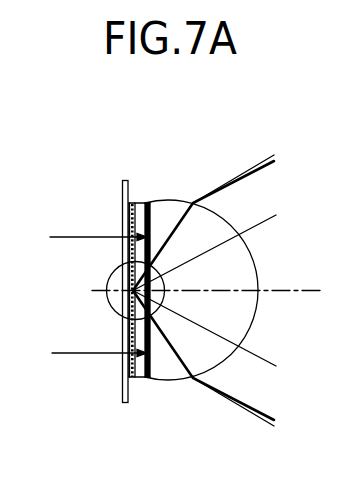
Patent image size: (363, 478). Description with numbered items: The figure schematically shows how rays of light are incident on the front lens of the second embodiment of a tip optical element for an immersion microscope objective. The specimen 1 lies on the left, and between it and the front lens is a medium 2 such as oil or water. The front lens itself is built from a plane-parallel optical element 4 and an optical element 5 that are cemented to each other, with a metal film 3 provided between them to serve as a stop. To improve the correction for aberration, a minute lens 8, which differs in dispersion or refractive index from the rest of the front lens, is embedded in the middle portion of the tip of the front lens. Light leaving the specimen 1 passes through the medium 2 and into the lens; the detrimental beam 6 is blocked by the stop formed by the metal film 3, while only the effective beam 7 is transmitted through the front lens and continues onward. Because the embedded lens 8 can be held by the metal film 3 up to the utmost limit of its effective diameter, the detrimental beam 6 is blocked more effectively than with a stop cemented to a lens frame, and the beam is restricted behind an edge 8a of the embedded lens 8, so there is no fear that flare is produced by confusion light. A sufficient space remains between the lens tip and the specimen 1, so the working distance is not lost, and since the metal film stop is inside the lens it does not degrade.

The specimen 1 is at (123, 403).
The medium 2 is at (134, 203).
The metal film 3 is at (152, 379).
The plane-parallel optical element 4 is at (146, 203).
The optical element 5 is at (180, 374).
The detrimental beam 6 is at (50, 237).
The effective beam 7 is at (250, 167).
The minute lens 8 is at (128, 263).
The edge of the embedded lens 8a is at (128, 330).